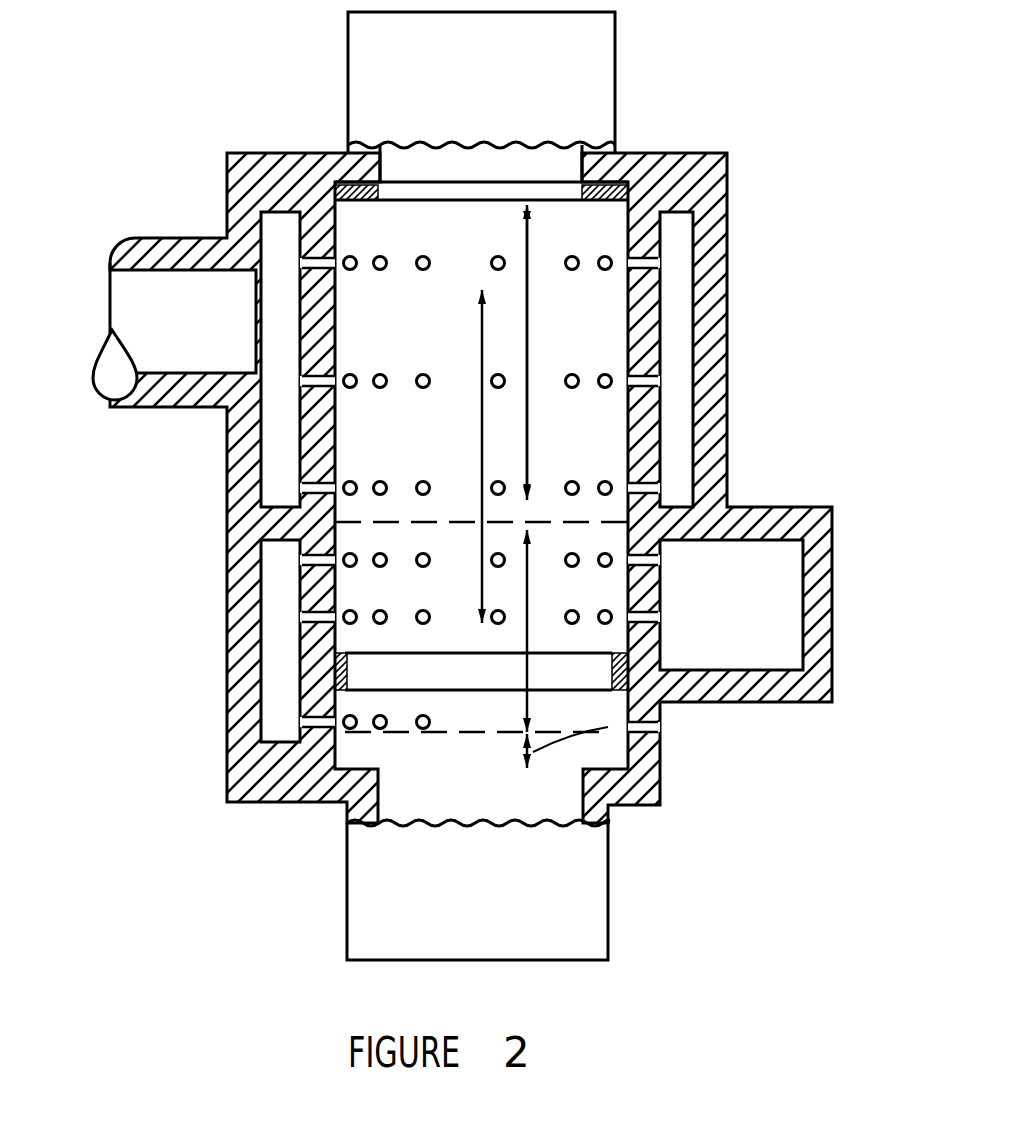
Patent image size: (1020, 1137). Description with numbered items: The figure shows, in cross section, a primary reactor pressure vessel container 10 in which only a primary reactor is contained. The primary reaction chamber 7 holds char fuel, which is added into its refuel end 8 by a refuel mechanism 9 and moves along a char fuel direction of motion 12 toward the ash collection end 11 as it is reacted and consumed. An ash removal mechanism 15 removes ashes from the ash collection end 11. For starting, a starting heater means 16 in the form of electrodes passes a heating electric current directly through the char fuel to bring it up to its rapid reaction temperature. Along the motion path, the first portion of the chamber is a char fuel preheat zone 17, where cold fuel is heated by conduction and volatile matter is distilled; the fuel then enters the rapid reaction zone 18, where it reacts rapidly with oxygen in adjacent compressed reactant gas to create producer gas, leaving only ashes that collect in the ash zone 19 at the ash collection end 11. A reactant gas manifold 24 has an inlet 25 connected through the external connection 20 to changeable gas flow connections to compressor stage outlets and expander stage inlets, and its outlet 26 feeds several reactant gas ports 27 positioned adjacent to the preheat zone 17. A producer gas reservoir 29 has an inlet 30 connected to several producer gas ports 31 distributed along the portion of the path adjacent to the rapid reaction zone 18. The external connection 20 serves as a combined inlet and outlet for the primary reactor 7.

The primary reaction chamber 7 is at (598, 230).
The refuel end 8 is at (420, 218).
The refuel mechanism 9 is at (560, 90).
The pressure vessel container 10 is at (620, 163).
The ash collection end 11 is at (587, 752).
The char fuel direction of motion 12 is at (340, 437).
The ash removal mechanism 15 is at (578, 912).
The starting heater means 16 is at (262, 214).
The char fuel preheat zone 17 is at (532, 355).
The rapid reaction zone 18 is at (530, 592).
The ash zone 19 is at (575, 732).
The external connection 20 is at (198, 295).
The reactant gas manifold 24 is at (273, 337).
The inlet of reactant gas manifold 25 is at (270, 290).
The outlet of reactant gas manifold 26 is at (282, 357).
The reactant gas ports 27 is at (277, 390).
The producer gas reservoir 29 is at (273, 605).
The inlet of producer gas reservoir 30 is at (683, 609).
The producer gas ports 31 is at (340, 620).